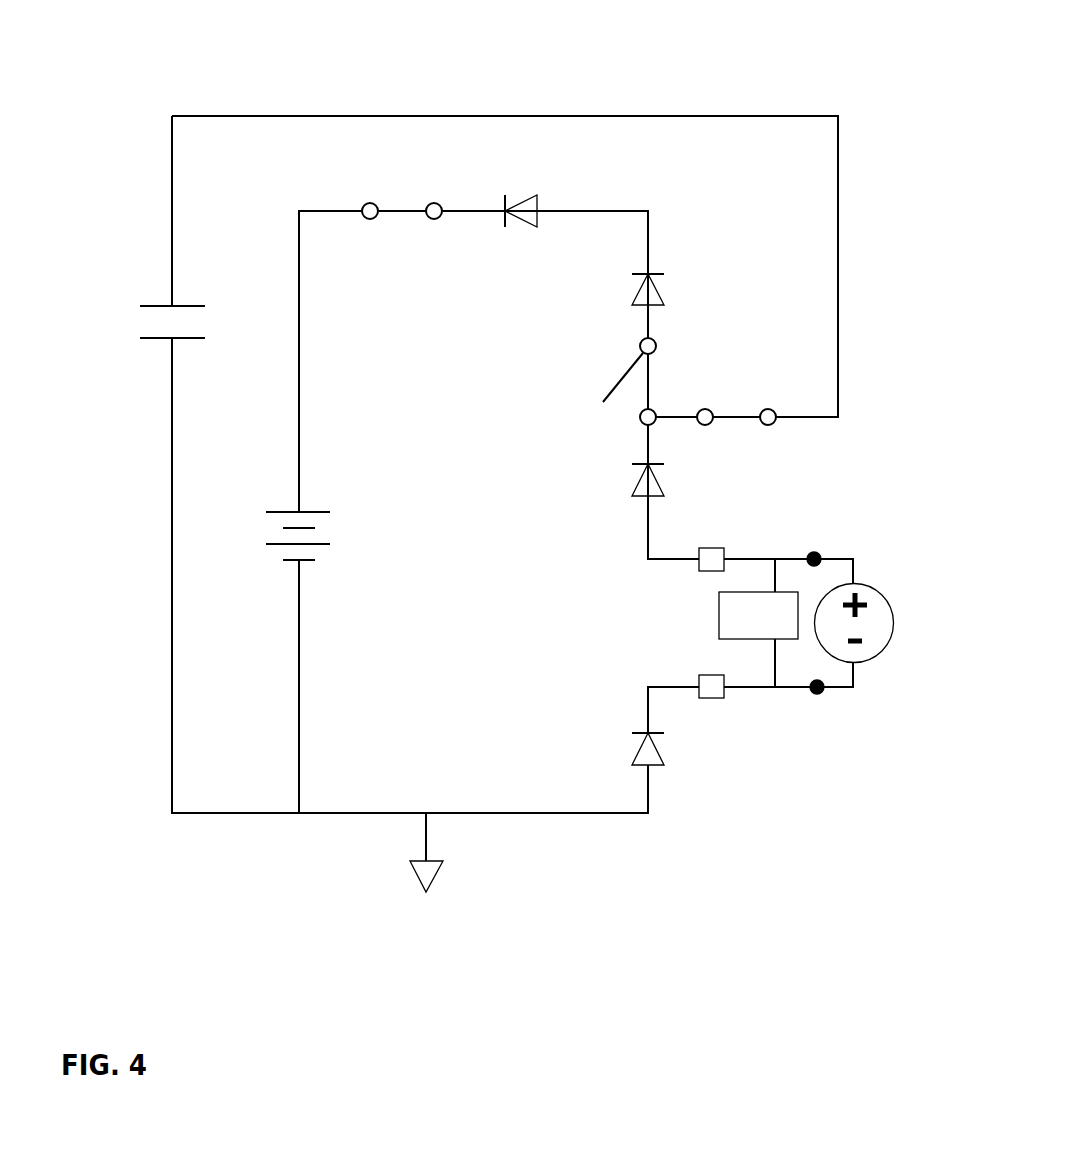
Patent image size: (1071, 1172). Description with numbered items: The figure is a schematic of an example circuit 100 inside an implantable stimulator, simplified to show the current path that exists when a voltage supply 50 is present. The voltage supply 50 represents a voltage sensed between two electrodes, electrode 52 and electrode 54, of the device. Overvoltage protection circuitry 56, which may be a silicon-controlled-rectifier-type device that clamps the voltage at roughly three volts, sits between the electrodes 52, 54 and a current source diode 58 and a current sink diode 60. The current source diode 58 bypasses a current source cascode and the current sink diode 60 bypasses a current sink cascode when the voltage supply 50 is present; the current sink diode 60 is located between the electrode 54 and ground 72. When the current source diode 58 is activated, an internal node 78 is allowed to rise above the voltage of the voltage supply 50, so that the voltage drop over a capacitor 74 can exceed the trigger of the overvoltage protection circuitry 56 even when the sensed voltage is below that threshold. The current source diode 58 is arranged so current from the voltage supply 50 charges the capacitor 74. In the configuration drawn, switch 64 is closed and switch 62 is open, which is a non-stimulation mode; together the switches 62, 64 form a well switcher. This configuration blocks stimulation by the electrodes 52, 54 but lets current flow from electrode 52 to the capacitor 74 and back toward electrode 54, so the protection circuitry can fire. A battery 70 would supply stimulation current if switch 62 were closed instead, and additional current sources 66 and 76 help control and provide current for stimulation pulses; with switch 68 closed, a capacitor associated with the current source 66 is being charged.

The example circuit 100 is at (626, 52).
The internal node 78 is at (292, 116).
The capacitor 74 is at (141, 321).
The battery 70 is at (331, 528).
The switch 68 is at (400, 211).
The current source 66 is at (537, 202).
The current source 76 is at (663, 298).
The switch 62 is at (603, 398).
The switch 64 is at (745, 417).
The current source diode 58 is at (633, 497).
The electrode 52 is at (816, 552).
The electrode 54 is at (817, 695).
The voltage supply 50 is at (887, 599).
The overvoltage protection circuitry 56 is at (720, 615).
The current sink diode 60 is at (634, 762).
The ground 72 is at (418, 878).